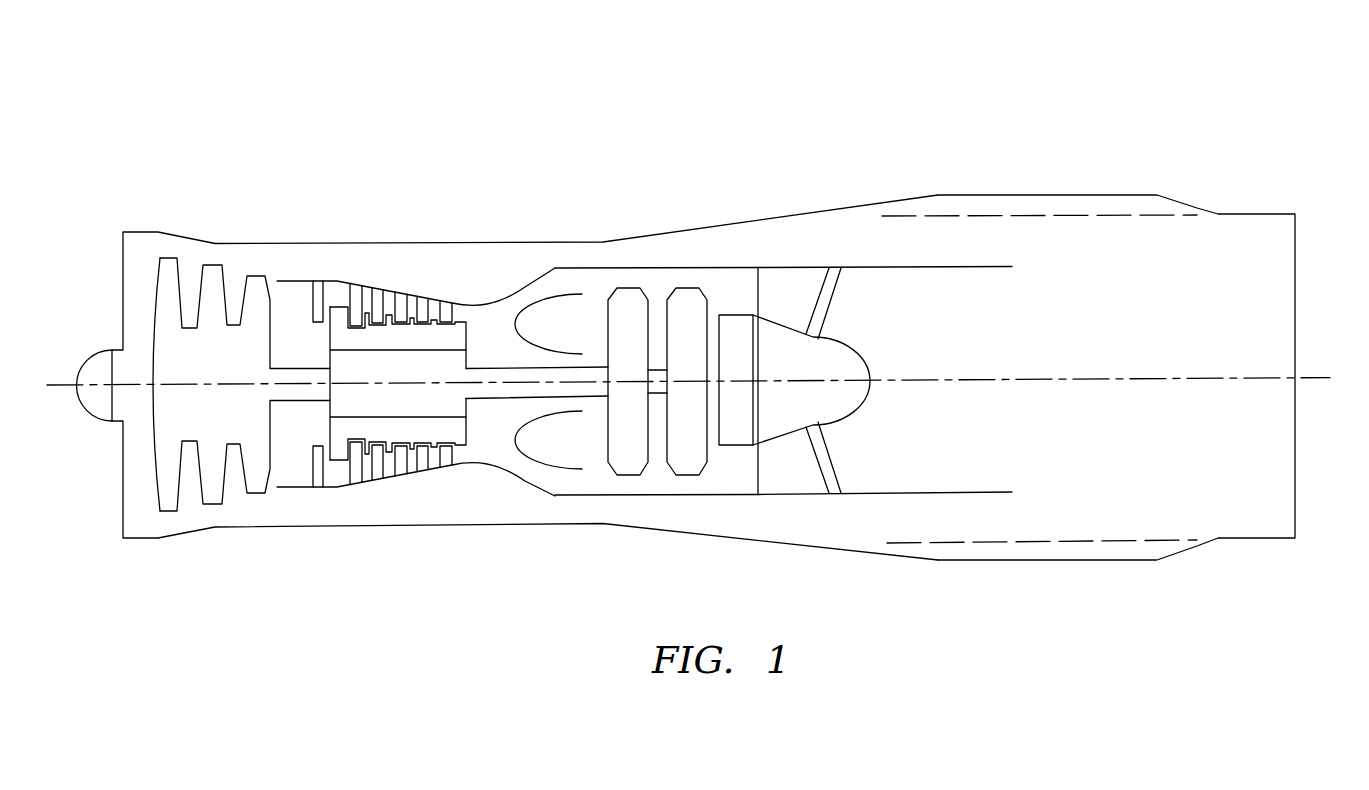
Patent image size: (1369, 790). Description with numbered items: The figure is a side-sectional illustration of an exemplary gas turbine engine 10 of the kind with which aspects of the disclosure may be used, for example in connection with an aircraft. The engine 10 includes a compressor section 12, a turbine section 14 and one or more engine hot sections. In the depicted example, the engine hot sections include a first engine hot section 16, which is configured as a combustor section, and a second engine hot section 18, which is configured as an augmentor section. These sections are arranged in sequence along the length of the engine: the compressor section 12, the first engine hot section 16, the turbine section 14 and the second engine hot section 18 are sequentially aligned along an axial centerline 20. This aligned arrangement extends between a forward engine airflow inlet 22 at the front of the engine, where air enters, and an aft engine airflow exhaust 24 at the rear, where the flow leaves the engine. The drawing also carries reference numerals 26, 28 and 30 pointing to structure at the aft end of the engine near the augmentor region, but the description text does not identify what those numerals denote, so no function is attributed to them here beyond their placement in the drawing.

The gas turbine engine 10 is at (704, 333).
The compressor section 12 is at (392, 274).
The turbine section 14 is at (661, 249).
The first engine hot section 16 is at (553, 257).
The second engine hot section 18 is at (812, 248).
The axial centerline 20 is at (1326, 378).
The forward engine airflow inlet 22 is at (123, 490).
The aft engine airflow exhaust 24 is at (1295, 503).
The tail cone 26 is at (836, 418).
The core exhaust duct 28 is at (980, 492).
The strut 30 is at (807, 465).